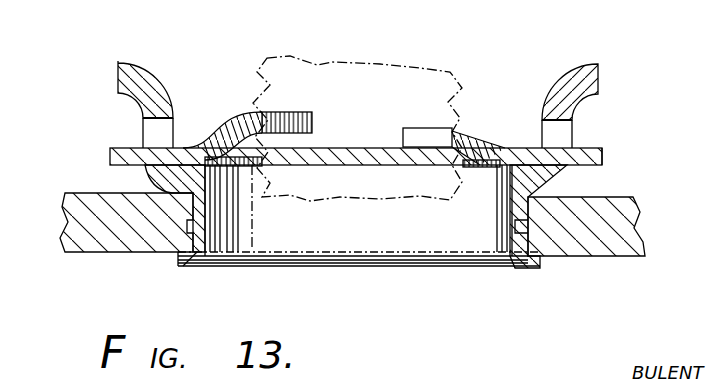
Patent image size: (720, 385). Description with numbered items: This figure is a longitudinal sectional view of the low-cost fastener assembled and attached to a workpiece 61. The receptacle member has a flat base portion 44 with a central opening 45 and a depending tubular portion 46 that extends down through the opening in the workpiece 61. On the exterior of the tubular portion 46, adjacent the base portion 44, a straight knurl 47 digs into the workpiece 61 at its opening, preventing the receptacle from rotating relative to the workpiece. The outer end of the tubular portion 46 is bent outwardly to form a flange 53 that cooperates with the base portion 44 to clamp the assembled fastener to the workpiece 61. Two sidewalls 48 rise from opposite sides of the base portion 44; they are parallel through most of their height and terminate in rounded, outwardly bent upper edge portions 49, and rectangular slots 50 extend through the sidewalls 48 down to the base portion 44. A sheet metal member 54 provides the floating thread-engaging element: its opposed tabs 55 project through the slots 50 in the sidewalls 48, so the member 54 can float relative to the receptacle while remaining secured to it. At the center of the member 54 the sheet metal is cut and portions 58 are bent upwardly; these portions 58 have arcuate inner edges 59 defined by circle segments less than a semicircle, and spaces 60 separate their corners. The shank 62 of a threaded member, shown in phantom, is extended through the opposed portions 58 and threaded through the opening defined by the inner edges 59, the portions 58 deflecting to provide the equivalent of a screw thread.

The flat base portion 44 is at (560, 180).
The central opening 45 is at (505, 180).
The depending tubular portion 46 is at (353, 253).
The straight knurl 47 is at (192, 228).
The sidewalls 48 is at (172, 113).
The hook 49 is at (155, 67).
The rectangular slots 50 is at (144, 131).
The flange 53 is at (183, 263).
The sheet metal member 54 is at (592, 148).
The opposed tabs 55 is at (110, 148).
The upwardly bent portions 58 is at (237, 120).
The arcuate inner edges 59 is at (297, 115).
The spaces 60 is at (358, 128).
The workpiece 61 is at (637, 214).
The shank 62 is at (356, 62).